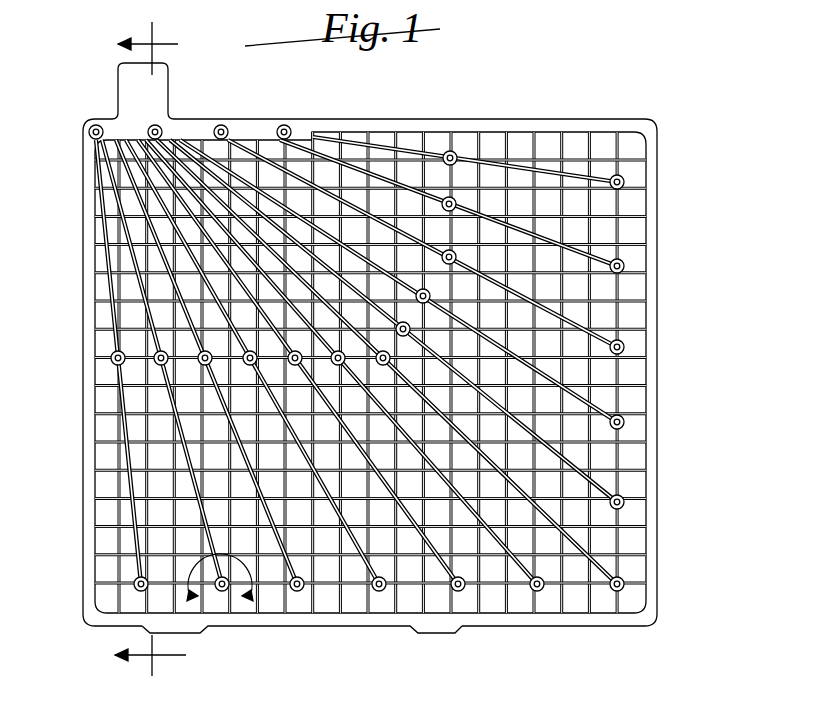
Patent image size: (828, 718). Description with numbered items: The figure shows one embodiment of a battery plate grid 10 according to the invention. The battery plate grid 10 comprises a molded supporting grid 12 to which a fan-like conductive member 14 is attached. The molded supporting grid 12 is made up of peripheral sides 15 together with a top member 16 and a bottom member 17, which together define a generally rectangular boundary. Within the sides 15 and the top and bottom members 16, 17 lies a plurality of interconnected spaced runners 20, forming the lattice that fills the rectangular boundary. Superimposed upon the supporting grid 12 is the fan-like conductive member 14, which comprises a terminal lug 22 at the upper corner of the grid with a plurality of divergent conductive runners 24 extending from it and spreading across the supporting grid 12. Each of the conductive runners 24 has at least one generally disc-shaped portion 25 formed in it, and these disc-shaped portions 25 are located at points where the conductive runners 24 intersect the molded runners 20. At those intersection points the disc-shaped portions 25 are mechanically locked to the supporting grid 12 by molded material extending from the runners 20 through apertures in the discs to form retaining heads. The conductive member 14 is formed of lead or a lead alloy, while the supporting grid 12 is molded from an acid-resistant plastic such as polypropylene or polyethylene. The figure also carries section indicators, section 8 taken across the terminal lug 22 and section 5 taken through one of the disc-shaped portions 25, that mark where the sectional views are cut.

The battery plate grid 10 is at (70, 262).
The molded supporting grid 12 is at (455, 114).
The fan-like conductive member 14 is at (252, 120).
The peripheral sides 15 is at (83, 346).
The top member 16 is at (399, 125).
The bottom member 17 is at (386, 628).
The interconnected spaced runners 20 is at (110, 513).
The terminal lug 22 is at (128, 90).
The divergent conductive runners 24 is at (120, 205).
The disc-shaped portion 25 is at (625, 182).
The section line 8- 8 is at (159, 349).
The section line 5- 5 is at (217, 586).